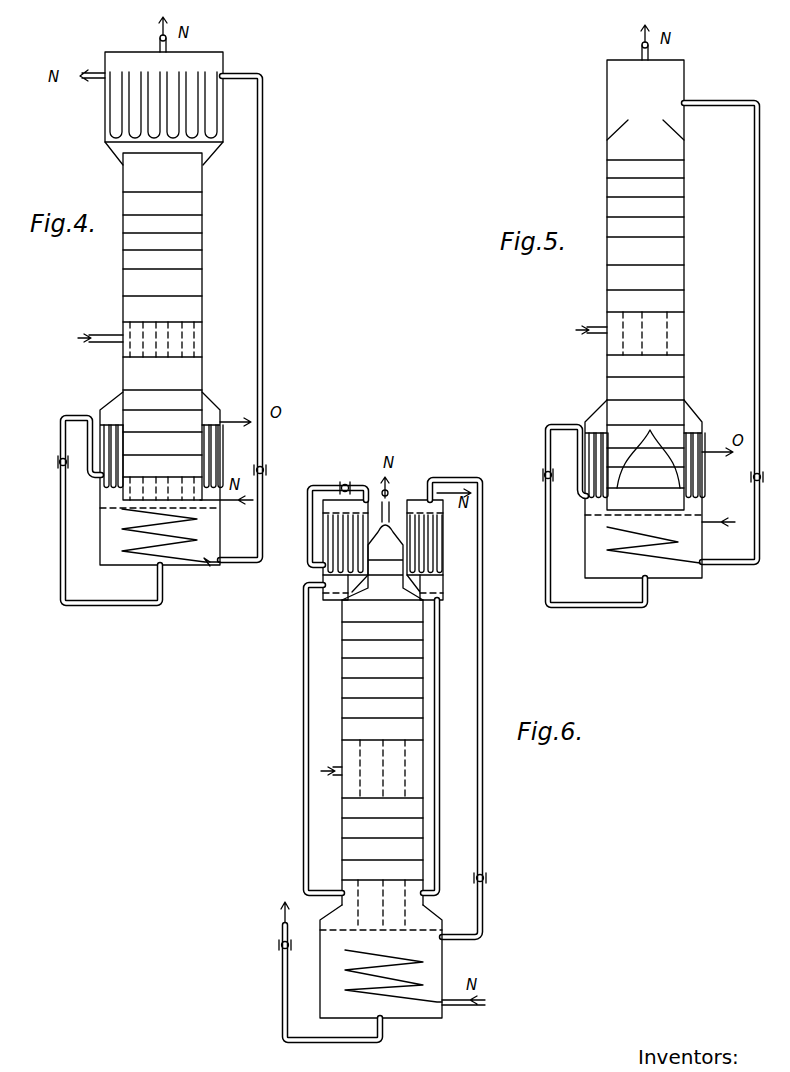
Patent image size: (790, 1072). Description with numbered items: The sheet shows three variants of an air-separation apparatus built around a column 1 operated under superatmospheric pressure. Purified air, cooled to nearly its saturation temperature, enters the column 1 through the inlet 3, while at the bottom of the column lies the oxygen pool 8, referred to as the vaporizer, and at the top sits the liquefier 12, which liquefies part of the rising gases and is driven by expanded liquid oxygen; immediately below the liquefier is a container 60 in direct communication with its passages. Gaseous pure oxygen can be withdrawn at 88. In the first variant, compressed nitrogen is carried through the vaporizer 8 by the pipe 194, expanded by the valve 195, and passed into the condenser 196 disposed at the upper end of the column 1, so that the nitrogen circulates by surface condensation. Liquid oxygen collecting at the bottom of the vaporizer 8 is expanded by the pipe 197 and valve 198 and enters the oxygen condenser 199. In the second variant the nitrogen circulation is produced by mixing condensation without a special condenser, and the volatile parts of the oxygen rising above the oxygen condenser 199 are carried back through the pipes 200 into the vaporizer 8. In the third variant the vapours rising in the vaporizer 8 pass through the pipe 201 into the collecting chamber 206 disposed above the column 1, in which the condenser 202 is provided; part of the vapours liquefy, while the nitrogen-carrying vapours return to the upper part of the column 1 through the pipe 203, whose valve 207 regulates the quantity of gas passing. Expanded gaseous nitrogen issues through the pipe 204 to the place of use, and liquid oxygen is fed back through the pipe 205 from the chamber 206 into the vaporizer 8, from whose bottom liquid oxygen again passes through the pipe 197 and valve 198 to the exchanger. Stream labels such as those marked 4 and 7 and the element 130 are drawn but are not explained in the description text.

In FIG. 4, the column 1 is at (162, 326).
In FIG. 5, the column 1 is at (645, 285).
In FIG. 6, the column 1 is at (382, 762).
In FIG. 4, the inlet 3 is at (97, 335).
In FIG. 5, the inlet 3 is at (582, 326).
In FIG. 6, the inlet 3 is at (330, 760).
In FIG. 4, the vent valve 4 is at (149, 34).
In FIG. 6, the vent valve 4 is at (373, 491).
In FIG. 4, the outlet valve 7 is at (90, 67).
In FIG. 5, the outlet valve 7 is at (634, 42).
In FIG. 4, the oxygen pool 8 is at (162, 535).
In FIG. 5, the oxygen pool 8 is at (647, 549).
In FIG. 6, the oxygen pool 8 is at (381, 961).
In FIG. 5, the liquefier 12 is at (690, 430).
In FIG. 4, the container 60 is at (113, 153).
In FIG. 4, the oxygen withdrawal point 88 is at (233, 420).
In FIG. 5, the oxygen withdrawal point 88 is at (712, 448).
In FIG. 5, the vapor dome 130 is at (676, 132).
In FIG. 6, the vapor dome 130 is at (382, 556).
In FIG. 4, the pipe 194 is at (262, 290).
In FIG. 5, the pipe 194 is at (753, 284).
In FIG. 6, the pipe 194 is at (483, 645).
In FIG. 4, the valve 195 is at (266, 466).
In FIG. 5, the valve 195 is at (738, 481).
In FIG. 6, the valve 195 is at (485, 880).
In FIG. 4, the condenser 196 is at (180, 90).
In FIG. 4, the pipe 197 is at (120, 606).
In FIG. 5, the pipe 197 is at (600, 607).
In FIG. 6, the pipe 197 is at (300, 1038).
In FIG. 4, the valve 198 is at (66, 468).
In FIG. 5, the valve 198 is at (546, 472).
In FIG. 6, the valve 198 is at (280, 943).
In FIG. 4, the oxygen condenser 199 is at (217, 468).
In FIG. 5, the oxygen condenser 199 is at (590, 430).
In FIG. 5, the pipes 200 is at (674, 432).
In FIG. 6, the pipe 201 is at (305, 805).
In FIG. 6, the condenser 202 is at (330, 548).
In FIG. 6, the pipe 203 is at (309, 524).
In FIG. 6, the pipe 204 is at (433, 490).
In FIG. 6, the pipe 205 is at (441, 772).
In FIG. 6, the collecting chamber 206 is at (437, 588).
In FIG. 6, the valve 207 is at (344, 483).